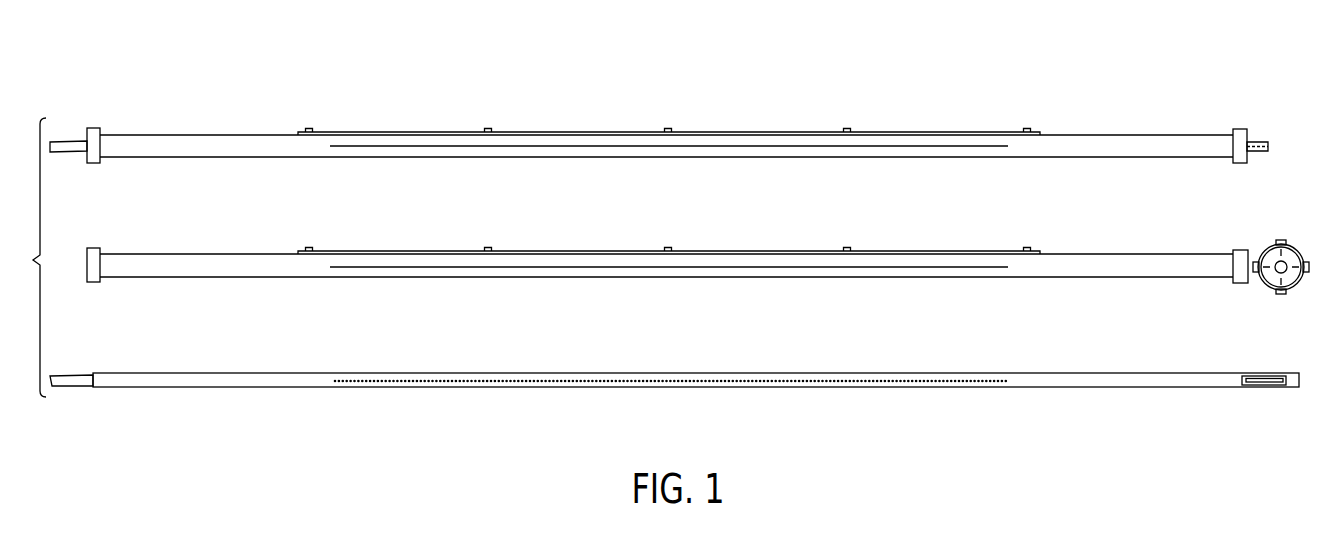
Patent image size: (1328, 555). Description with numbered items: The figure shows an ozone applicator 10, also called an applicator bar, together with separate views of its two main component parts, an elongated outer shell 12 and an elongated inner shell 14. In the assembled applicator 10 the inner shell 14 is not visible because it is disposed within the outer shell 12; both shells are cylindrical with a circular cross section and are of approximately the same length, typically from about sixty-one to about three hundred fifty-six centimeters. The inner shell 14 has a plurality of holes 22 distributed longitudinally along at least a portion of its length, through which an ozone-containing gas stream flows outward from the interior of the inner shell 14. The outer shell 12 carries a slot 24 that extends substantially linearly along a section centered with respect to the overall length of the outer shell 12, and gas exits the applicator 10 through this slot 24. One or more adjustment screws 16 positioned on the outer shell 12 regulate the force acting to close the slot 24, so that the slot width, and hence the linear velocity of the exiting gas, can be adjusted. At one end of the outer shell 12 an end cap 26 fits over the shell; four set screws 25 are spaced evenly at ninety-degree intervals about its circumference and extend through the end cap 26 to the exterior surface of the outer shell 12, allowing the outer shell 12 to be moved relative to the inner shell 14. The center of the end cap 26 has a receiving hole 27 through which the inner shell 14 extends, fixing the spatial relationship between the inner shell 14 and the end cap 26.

The ozone applicator 10 is at (247, 78).
The outer shell 12 is at (1138, 254).
The inner shell 14 is at (1087, 388).
The adjustment screws 16 is at (846, 248).
The holes 22 is at (455, 384).
The slot 24 is at (713, 145).
The set screws 25 is at (1280, 240).
The end cap 26 is at (1298, 251).
The receiving hole 27 is at (1279, 272).